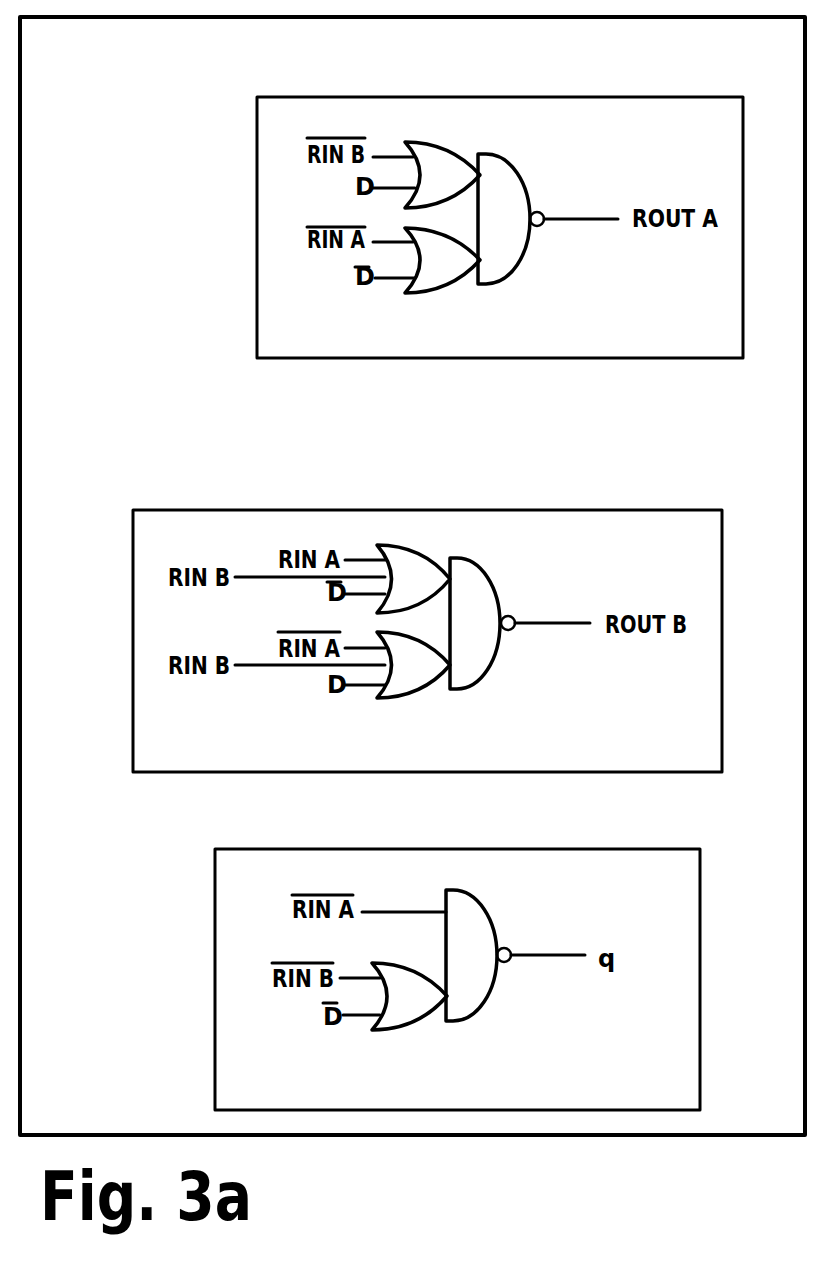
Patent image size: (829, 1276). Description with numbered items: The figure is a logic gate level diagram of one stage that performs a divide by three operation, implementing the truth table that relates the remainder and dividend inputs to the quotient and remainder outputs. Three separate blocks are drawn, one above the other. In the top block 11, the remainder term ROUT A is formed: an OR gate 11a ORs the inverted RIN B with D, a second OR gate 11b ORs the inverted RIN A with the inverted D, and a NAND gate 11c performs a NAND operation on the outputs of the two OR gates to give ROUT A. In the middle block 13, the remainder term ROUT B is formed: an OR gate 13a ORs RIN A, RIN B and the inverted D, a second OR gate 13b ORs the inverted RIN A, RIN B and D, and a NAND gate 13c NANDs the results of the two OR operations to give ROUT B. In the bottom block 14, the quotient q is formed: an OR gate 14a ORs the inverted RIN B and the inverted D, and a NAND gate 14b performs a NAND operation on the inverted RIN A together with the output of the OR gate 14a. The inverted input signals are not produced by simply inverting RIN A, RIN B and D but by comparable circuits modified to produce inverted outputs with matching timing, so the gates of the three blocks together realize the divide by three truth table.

The block 11 is at (258, 117).
The OR gate 11a is at (437, 137).
The OR gate 11b is at (460, 290).
The NAND gate 11c is at (515, 262).
The block 13 is at (353, 508).
The OR gate 13a is at (410, 548).
The OR gate 13b is at (417, 693).
The NAND gate 13c is at (490, 663).
The block 14 is at (518, 848).
The OR gate 14a is at (410, 1025).
The NAND gate 14b is at (478, 913).